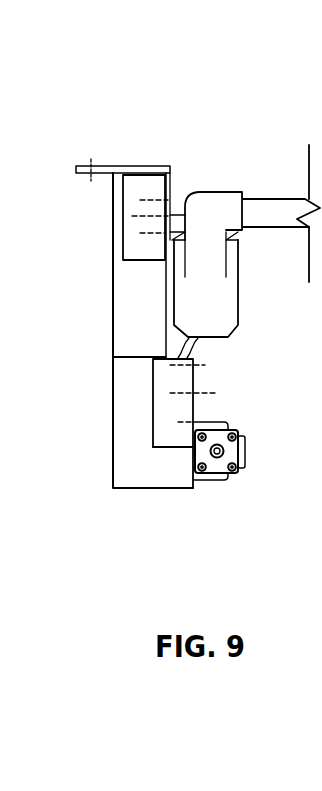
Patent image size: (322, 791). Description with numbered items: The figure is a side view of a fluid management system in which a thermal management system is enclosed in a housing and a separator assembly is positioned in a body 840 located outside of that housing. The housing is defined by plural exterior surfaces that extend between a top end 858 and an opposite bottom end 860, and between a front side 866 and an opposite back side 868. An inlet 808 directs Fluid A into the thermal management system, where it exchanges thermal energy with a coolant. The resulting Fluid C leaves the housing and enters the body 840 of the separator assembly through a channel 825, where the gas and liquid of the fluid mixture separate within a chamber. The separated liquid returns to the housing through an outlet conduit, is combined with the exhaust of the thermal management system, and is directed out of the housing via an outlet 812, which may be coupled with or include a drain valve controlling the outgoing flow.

The inlet 808 is at (222, 215).
The outlet 812 is at (223, 492).
The channel 825 is at (178, 212).
The body 840 is at (207, 190).
The top end 858 is at (136, 161).
The bottom end 860 is at (148, 490).
The front side 866 is at (155, 332).
The back side 868 is at (104, 323).